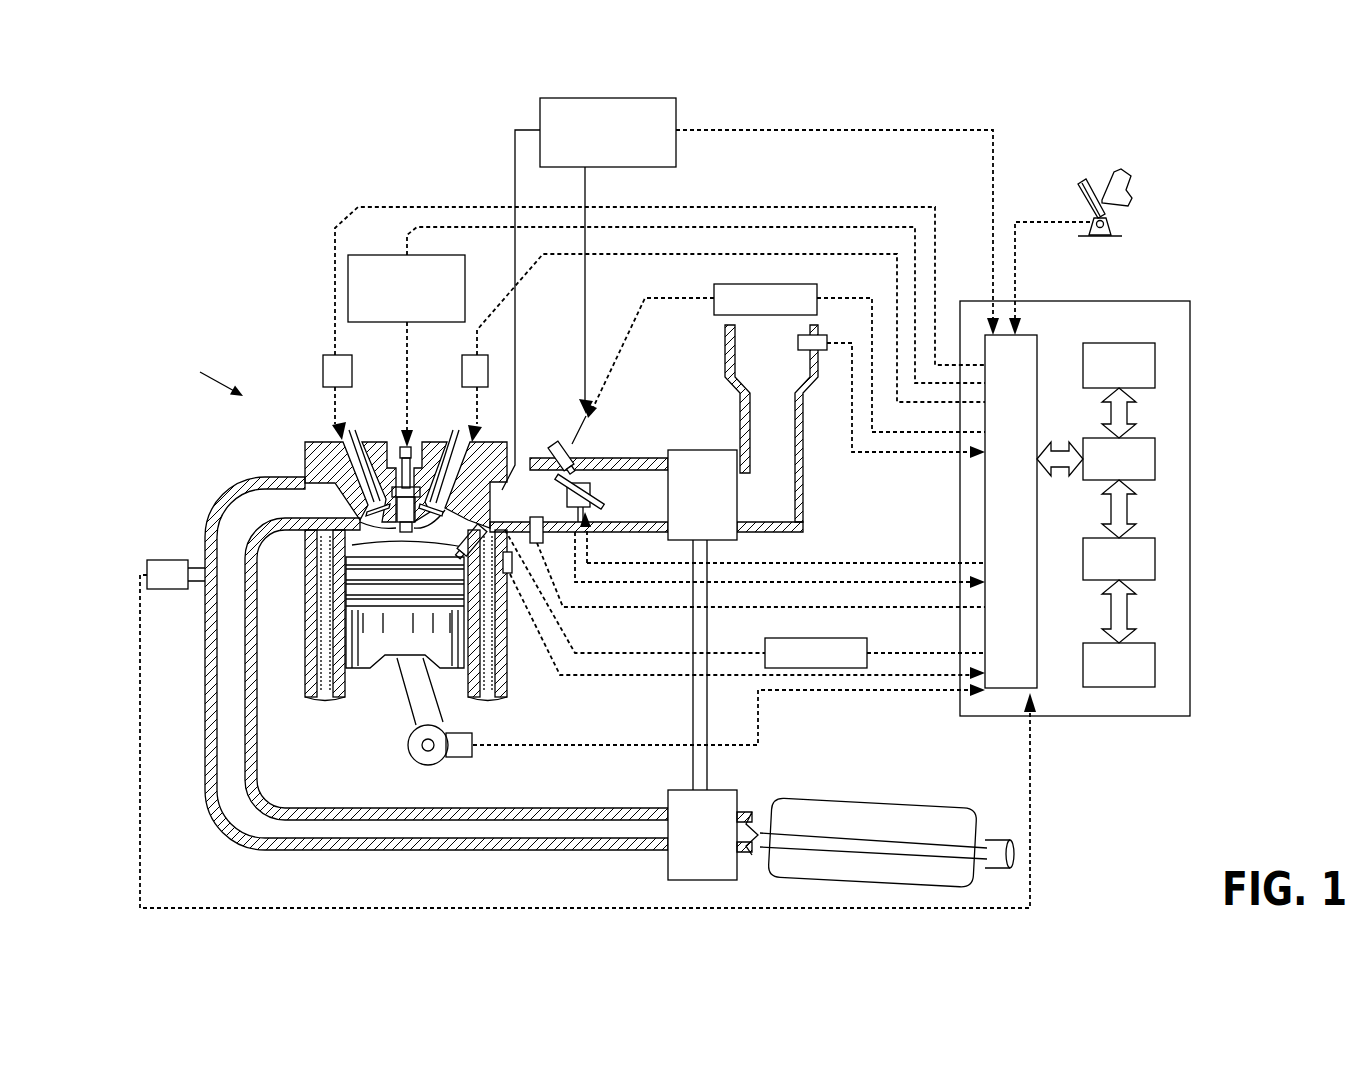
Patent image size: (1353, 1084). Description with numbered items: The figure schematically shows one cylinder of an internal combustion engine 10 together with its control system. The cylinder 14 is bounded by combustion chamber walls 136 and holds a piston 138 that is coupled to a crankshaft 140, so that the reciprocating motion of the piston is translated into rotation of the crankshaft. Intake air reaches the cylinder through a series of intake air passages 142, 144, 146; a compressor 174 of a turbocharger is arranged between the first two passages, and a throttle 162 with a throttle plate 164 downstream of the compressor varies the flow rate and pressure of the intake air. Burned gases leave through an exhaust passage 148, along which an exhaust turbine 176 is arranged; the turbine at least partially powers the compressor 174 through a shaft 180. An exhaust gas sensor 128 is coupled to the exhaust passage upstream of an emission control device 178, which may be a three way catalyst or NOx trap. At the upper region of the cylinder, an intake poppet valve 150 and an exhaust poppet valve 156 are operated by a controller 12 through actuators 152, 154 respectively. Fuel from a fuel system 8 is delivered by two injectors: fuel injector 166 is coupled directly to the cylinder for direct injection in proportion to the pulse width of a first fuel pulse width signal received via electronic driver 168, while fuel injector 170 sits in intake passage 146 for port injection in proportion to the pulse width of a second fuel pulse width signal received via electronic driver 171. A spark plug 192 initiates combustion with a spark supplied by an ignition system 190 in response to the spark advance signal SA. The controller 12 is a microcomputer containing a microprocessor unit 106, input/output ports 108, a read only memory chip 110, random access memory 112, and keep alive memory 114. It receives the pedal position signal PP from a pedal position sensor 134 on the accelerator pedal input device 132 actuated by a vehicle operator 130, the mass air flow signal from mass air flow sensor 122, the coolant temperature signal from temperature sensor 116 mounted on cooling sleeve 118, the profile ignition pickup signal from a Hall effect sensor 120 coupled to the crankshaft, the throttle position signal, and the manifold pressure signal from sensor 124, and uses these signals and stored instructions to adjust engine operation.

The fuel system 8 is at (645, 98).
The internal combustion engine 10 is at (200, 370).
The controller 12 is at (1192, 301).
The cylinder 14 is at (398, 633).
The microprocessor unit 106 is at (1155, 452).
The input/output ports 108 is at (1040, 340).
The read only memory chip 110 is at (1155, 358).
The random access memory 112 is at (1155, 556).
The keep alive memory 114 is at (1155, 662).
The temperature sensor 116 is at (510, 576).
The cooling sleeve 118 is at (503, 690).
The Hall effect sensor 120 is at (463, 760).
The mass air flow sensor 122 is at (822, 336).
The manifold pressure sensor 124 is at (541, 546).
The exhaust gas sensor 128 is at (147, 565).
The vehicle operator 130 is at (1118, 196).
The input device 132 is at (1088, 195).
The pedal position sensor 134 is at (1112, 222).
The combustion chamber walls 136 is at (347, 700).
The piston 138 is at (390, 645).
The crankshaft 140 is at (413, 764).
The intake air passage 142 is at (787, 371).
The intake air passage 144 is at (650, 506).
The intake air passage 146 is at (549, 506).
The exhaust passage 148 is at (292, 516).
The intake poppet valve 150 is at (441, 468).
The actuator 152 is at (462, 372).
The actuator 154 is at (323, 372).
The exhaust poppet valve 156 is at (365, 517).
The throttle 162 is at (587, 482).
The throttle plate 164 is at (556, 470).
The fuel injector 166 is at (472, 531).
The electronic driver 168 is at (768, 640).
The fuel injector 170 is at (564, 444).
The electronic driver 171 is at (716, 290).
The compressor 174 is at (683, 450).
The exhaust turbine 176 is at (668, 862).
The emission control device 178 is at (940, 813).
The shaft 180 is at (700, 753).
The ignition system 190 is at (362, 255).
The spark plug 192 is at (396, 458).